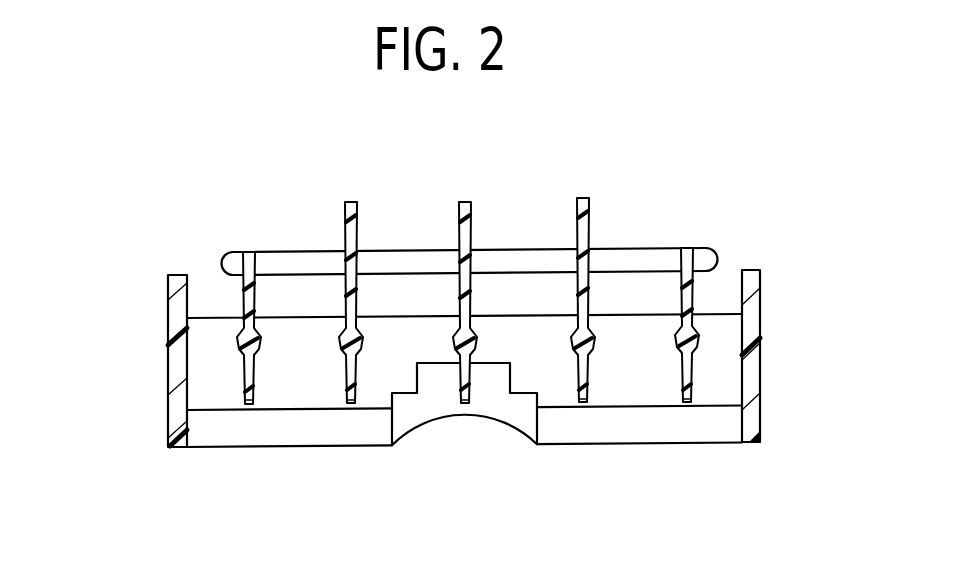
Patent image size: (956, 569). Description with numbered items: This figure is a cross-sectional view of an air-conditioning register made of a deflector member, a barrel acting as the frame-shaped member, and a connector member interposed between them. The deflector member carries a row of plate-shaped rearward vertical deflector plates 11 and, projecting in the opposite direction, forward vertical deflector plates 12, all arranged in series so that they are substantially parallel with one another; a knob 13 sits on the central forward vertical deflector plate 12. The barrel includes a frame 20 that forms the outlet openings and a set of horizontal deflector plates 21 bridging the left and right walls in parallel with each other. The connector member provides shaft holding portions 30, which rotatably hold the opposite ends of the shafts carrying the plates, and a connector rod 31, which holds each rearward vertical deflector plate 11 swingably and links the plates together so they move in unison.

The rearward vertical deflector plate 11 is at (243, 295).
The forward vertical deflector plate 12 is at (257, 377).
The knob 13 is at (460, 462).
The frame 20 is at (750, 373).
The horizontal deflector plate 21 is at (236, 432).
The shaft holding portion 30 is at (200, 358).
The connector rod 31 is at (278, 250).